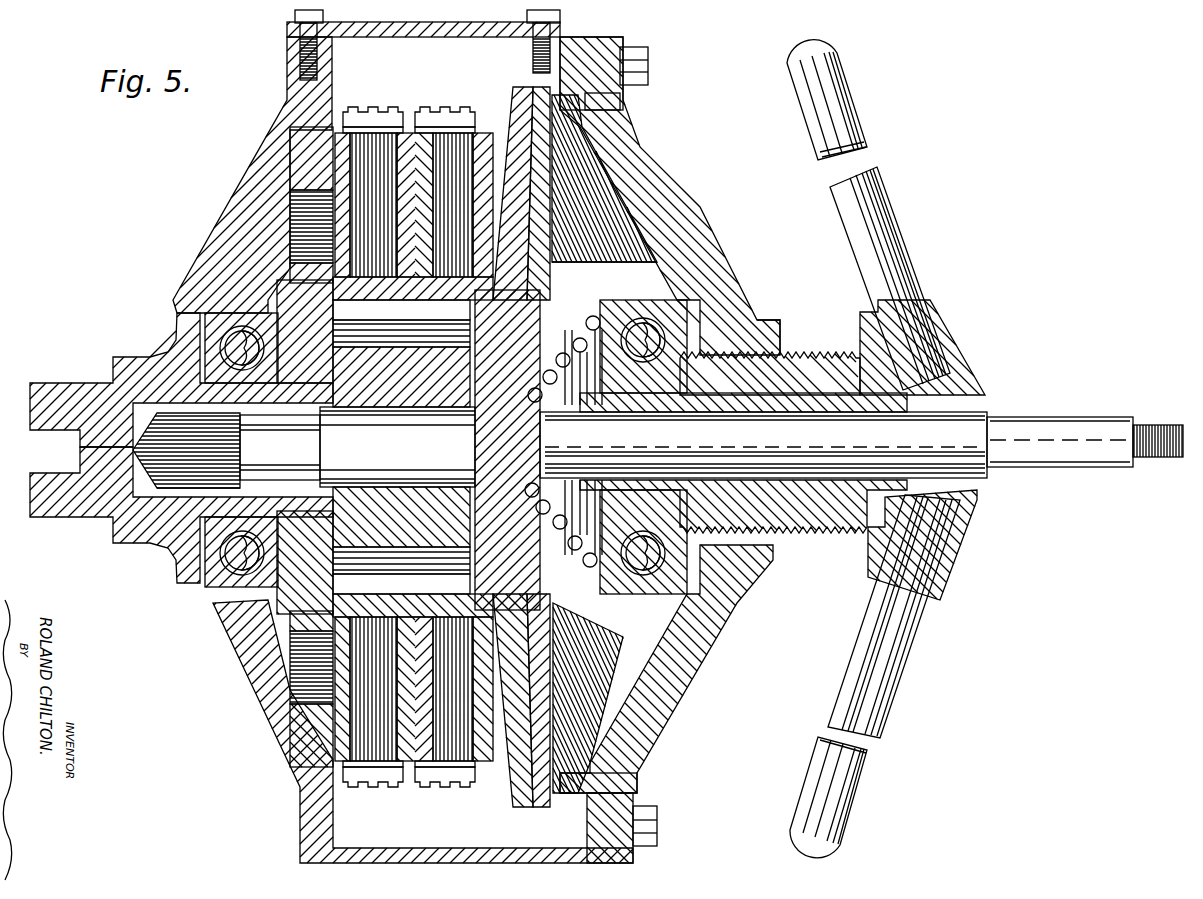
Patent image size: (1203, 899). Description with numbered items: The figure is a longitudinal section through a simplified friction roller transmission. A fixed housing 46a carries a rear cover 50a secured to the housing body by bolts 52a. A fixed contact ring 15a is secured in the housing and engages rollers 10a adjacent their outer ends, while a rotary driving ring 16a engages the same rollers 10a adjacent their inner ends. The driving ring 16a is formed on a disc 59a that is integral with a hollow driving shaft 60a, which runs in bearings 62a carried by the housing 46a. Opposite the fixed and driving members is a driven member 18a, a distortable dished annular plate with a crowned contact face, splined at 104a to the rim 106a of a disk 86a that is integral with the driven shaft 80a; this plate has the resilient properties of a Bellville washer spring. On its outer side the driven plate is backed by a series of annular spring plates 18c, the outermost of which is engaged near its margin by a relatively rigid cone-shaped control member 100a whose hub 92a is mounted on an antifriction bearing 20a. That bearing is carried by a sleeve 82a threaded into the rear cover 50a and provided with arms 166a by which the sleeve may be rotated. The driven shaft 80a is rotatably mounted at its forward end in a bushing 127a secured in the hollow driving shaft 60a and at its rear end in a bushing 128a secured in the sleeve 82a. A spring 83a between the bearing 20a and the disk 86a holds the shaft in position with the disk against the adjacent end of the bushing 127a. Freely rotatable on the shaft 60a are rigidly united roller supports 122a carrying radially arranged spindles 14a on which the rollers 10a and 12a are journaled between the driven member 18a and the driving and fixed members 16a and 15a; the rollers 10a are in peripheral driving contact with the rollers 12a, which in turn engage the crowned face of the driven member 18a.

The rollers 10a is at (340, 147).
The rollers 12a is at (443, 153).
The spindles 14a is at (370, 153).
The fixed contact ring 15a is at (337, 167).
The rotary driving ring 16a is at (287, 283).
The driven member 18a is at (513, 127).
The annular spring plates 18c is at (543, 127).
The antifriction bearing 20a is at (730, 280).
The fixed housing 46a is at (262, 183).
The rear cover 50a is at (637, 147).
The bolts 52a is at (648, 63).
The disc 59a is at (240, 297).
The hollow driving shaft 60a is at (182, 397).
The bearings 62a is at (220, 327).
The driven shaft 80a is at (240, 470).
The sleeve 82a is at (780, 367).
The spring 83a is at (575, 555).
The disk 86a is at (530, 347).
The hub 92a is at (700, 613).
The cone-shaped control member 100a is at (567, 110).
The spline 104a is at (548, 310).
The rim 106a is at (553, 330).
The roller supports 122a is at (443, 387).
The bushing 127a is at (333, 420).
The bushing 128a is at (760, 410).
The arms 166a is at (833, 70).